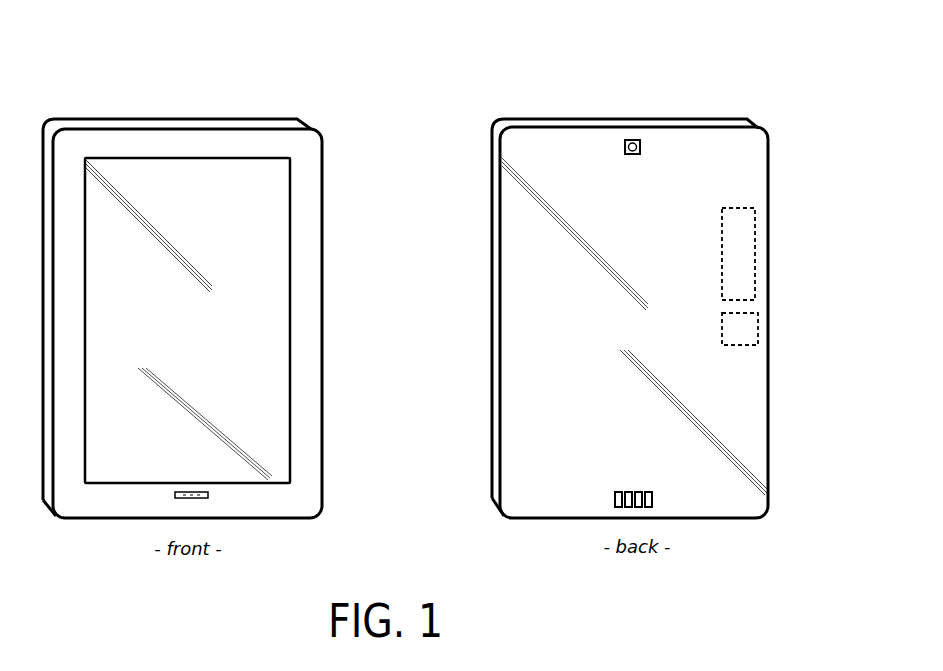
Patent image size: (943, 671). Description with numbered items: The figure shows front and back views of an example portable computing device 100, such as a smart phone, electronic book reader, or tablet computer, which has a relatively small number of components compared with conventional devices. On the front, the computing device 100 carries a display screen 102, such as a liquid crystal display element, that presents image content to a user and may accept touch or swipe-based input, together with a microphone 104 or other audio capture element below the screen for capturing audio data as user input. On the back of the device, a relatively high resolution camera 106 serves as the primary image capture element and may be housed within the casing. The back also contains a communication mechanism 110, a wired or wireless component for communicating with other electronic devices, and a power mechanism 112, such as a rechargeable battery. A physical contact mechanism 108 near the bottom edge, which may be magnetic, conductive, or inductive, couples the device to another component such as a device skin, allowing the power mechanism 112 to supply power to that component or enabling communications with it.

The computing device 100 is at (787, 94).
The display screen 102 is at (288, 255).
The microphone 104 is at (208, 495).
The camera 106 is at (632, 140).
The physical contact mechanism 108 is at (615, 499).
The communication mechanism 110 is at (755, 256).
The power mechanism 112 is at (758, 337).